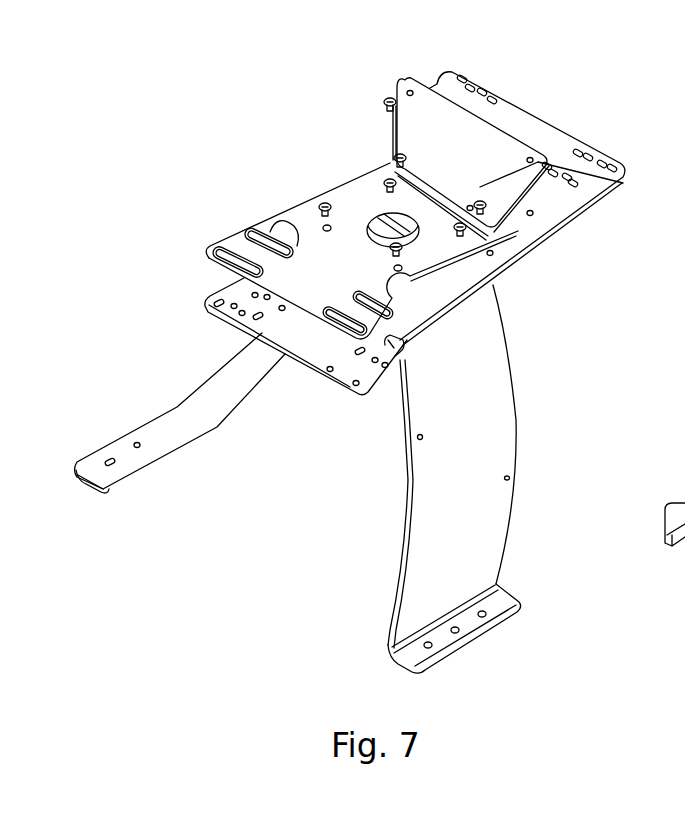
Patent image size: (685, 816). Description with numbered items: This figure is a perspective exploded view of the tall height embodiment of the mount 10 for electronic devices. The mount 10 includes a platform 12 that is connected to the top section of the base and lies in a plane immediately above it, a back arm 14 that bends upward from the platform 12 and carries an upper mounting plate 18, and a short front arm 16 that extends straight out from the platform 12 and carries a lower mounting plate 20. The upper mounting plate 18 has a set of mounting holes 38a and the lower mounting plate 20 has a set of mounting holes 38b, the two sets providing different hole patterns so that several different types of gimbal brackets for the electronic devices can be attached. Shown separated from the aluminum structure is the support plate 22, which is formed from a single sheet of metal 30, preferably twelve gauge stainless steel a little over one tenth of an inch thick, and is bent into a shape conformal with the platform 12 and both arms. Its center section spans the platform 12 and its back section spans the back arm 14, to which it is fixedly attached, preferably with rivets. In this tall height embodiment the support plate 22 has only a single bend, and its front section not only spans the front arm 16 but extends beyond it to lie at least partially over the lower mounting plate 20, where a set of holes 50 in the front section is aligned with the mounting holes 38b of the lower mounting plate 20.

The mount 10 is at (152, 69).
The platform 12 is at (423, 288).
The back arm 14 is at (513, 232).
The front arm 16 is at (377, 337).
The upper mounting plate 18 is at (514, 126).
The lower mounting plate 20 is at (315, 338).
The support plate 22 is at (430, 240).
The single sheet of metal 30 is at (345, 184).
The set of mounting holes 38a is at (597, 150).
The set of mounting holes 38b is at (328, 372).
The set of holes 50 is at (362, 328).